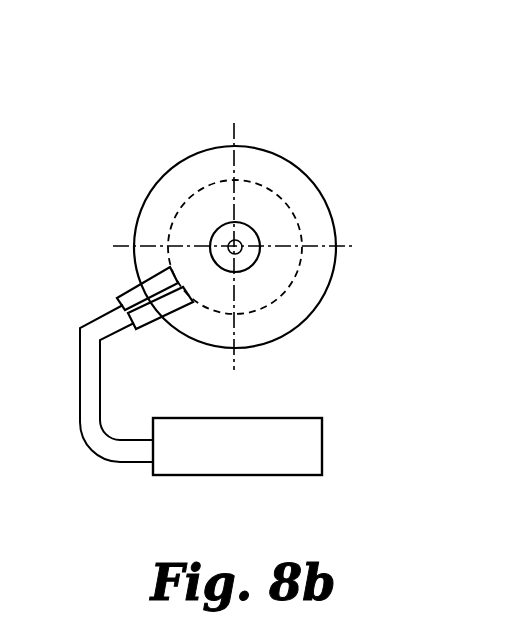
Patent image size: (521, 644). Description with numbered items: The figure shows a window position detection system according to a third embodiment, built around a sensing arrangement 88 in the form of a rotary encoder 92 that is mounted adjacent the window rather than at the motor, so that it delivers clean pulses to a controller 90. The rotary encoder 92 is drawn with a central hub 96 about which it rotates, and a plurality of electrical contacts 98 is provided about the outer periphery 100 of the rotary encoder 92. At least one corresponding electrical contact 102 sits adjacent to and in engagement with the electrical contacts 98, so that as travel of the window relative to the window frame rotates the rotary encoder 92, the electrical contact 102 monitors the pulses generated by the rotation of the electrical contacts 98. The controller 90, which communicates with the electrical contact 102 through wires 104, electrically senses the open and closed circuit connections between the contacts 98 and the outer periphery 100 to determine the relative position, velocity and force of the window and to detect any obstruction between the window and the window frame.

The sensing arrangement 88 is at (335, 115).
The controller 90 is at (278, 475).
The rotary encoder 92 is at (145, 195).
The central hub / shaft 96 is at (253, 227).
The electrical contacts 98 is at (197, 186).
The outer periphery 100 is at (148, 228).
The electrical contact 102 is at (128, 293).
The wires 104 is at (80, 377).